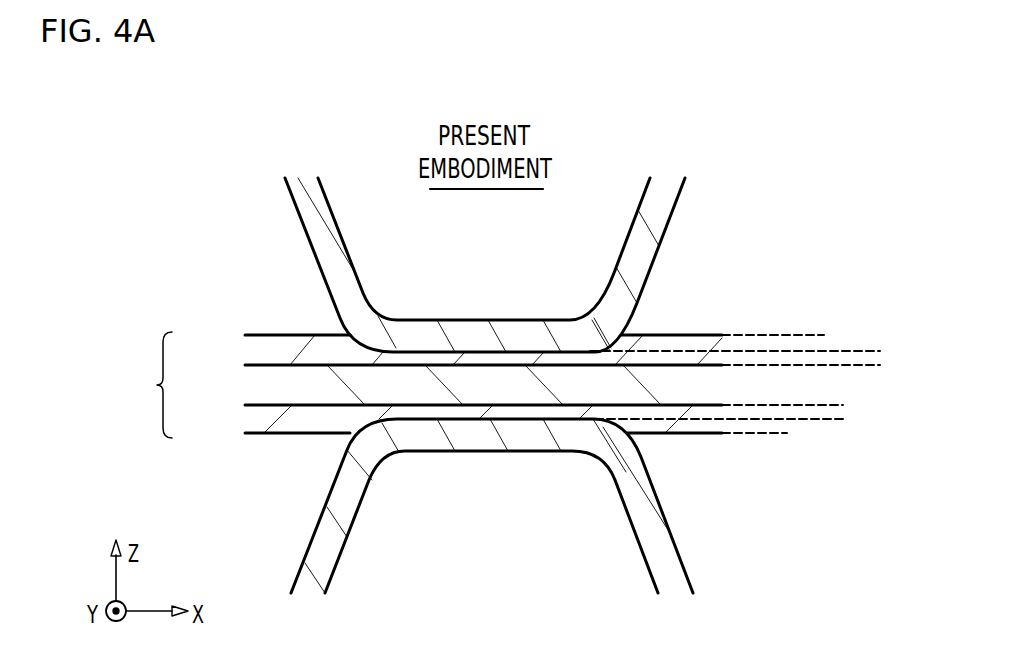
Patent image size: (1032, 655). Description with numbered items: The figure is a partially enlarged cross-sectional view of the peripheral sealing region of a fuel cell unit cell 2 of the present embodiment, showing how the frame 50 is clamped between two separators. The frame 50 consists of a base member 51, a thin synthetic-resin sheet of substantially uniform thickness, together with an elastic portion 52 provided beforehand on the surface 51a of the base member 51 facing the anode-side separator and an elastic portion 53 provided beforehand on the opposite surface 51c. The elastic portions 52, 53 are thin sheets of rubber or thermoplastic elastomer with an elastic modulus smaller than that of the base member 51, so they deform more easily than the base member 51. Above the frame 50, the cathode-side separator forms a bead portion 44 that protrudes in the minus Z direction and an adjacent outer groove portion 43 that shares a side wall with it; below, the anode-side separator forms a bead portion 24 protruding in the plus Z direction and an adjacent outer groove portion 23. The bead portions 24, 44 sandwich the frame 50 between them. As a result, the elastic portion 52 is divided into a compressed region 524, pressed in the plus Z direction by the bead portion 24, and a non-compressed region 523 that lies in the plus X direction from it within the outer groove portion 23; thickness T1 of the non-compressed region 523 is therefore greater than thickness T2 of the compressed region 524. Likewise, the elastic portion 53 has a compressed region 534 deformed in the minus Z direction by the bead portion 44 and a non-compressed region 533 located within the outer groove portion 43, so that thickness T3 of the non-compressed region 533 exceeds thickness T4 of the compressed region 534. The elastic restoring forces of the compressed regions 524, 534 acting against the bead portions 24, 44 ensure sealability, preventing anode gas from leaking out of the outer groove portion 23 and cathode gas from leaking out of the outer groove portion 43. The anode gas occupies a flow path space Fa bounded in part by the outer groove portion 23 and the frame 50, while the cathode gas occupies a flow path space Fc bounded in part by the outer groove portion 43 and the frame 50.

The unit cell 2 is at (801, 197).
The outer groove portion 23 is at (670, 533).
The bead portion 24 is at (522, 440).
The outer groove portion 43 is at (677, 202).
The bead portion 44 is at (522, 332).
The frame 50 is at (152, 385).
The base member 51 is at (260, 398).
The surface 51a is at (287, 407).
The surface 51c is at (290, 363).
The elastic portion 52 is at (258, 428).
The non-compressed region 523 is at (667, 432).
The compressed region 524 is at (468, 418).
The elastic portion 53 is at (258, 353).
The non-compressed region 533 is at (667, 342).
The compressed region 534 is at (467, 360).
The flow path space Fa is at (733, 498).
The flow path space Fc is at (725, 278).
The thickness of the non-compressed region T1 is at (787, 372).
The thickness of the compressed region T2 is at (843, 372).
The thickness of the non-compressed region T3 is at (824, 300).
The thickness of the compressed region T4 is at (880, 317).